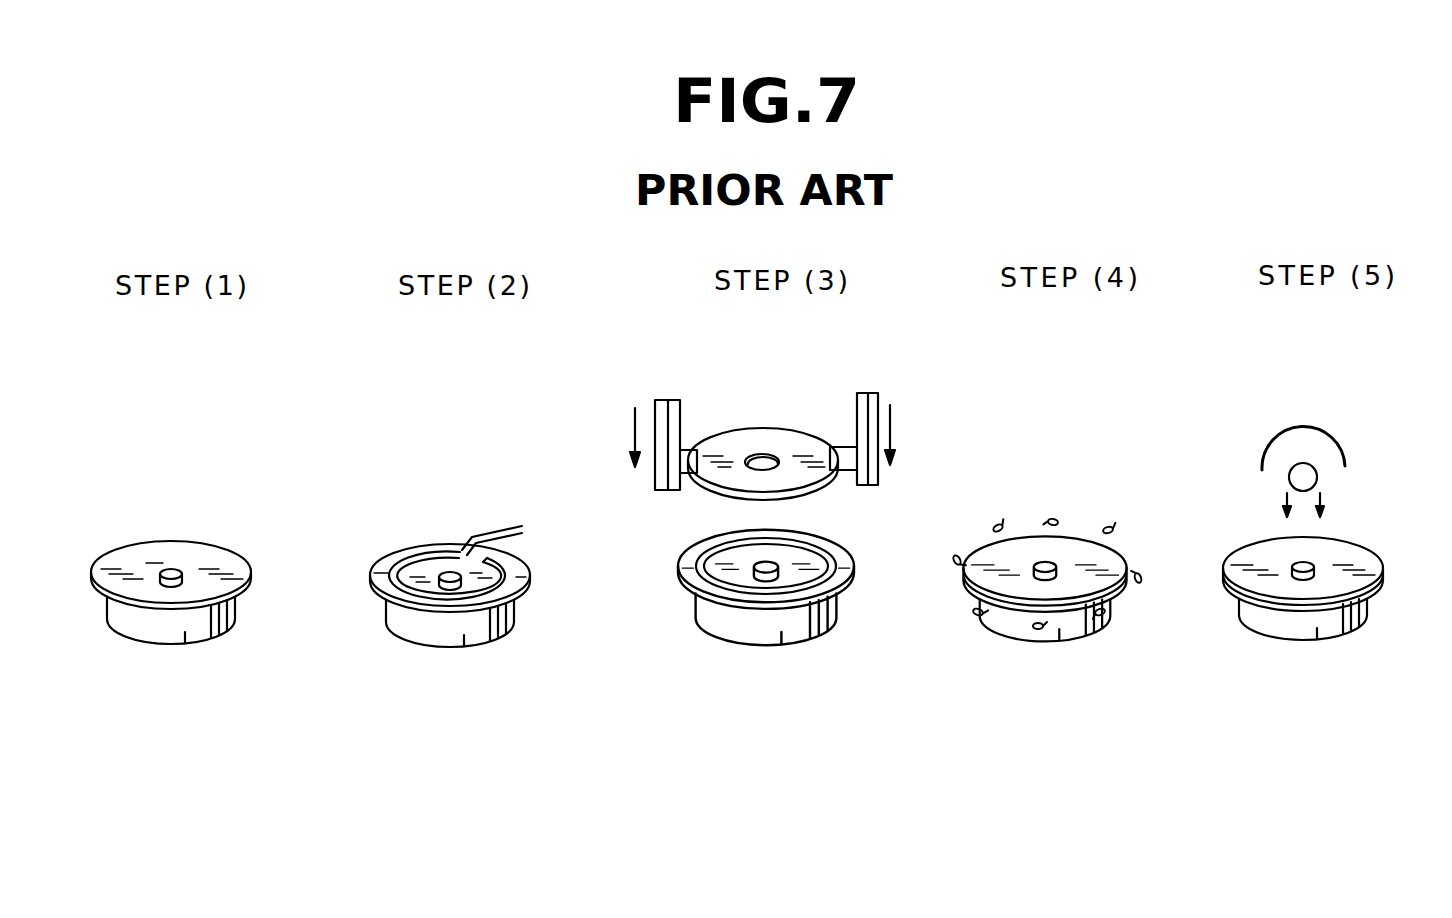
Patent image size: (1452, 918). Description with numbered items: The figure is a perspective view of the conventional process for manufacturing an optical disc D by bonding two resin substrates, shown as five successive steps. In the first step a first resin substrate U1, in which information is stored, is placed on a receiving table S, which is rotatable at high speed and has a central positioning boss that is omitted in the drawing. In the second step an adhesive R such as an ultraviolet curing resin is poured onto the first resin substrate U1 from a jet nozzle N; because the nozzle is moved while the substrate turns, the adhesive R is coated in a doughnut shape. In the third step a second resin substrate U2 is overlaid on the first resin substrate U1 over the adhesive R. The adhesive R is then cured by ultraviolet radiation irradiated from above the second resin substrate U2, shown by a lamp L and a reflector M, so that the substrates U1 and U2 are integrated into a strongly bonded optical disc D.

The first resin substrate U1 is at (218, 559).
The second resin substrate U2 is at (776, 432).
The receiving table S is at (185, 632).
The adhesive R is at (411, 556).
The jet nozzle N is at (489, 530).
The optical disc D is at (981, 541).
The reflecting mirror M is at (1325, 442).
The curing lamp L is at (1318, 477).